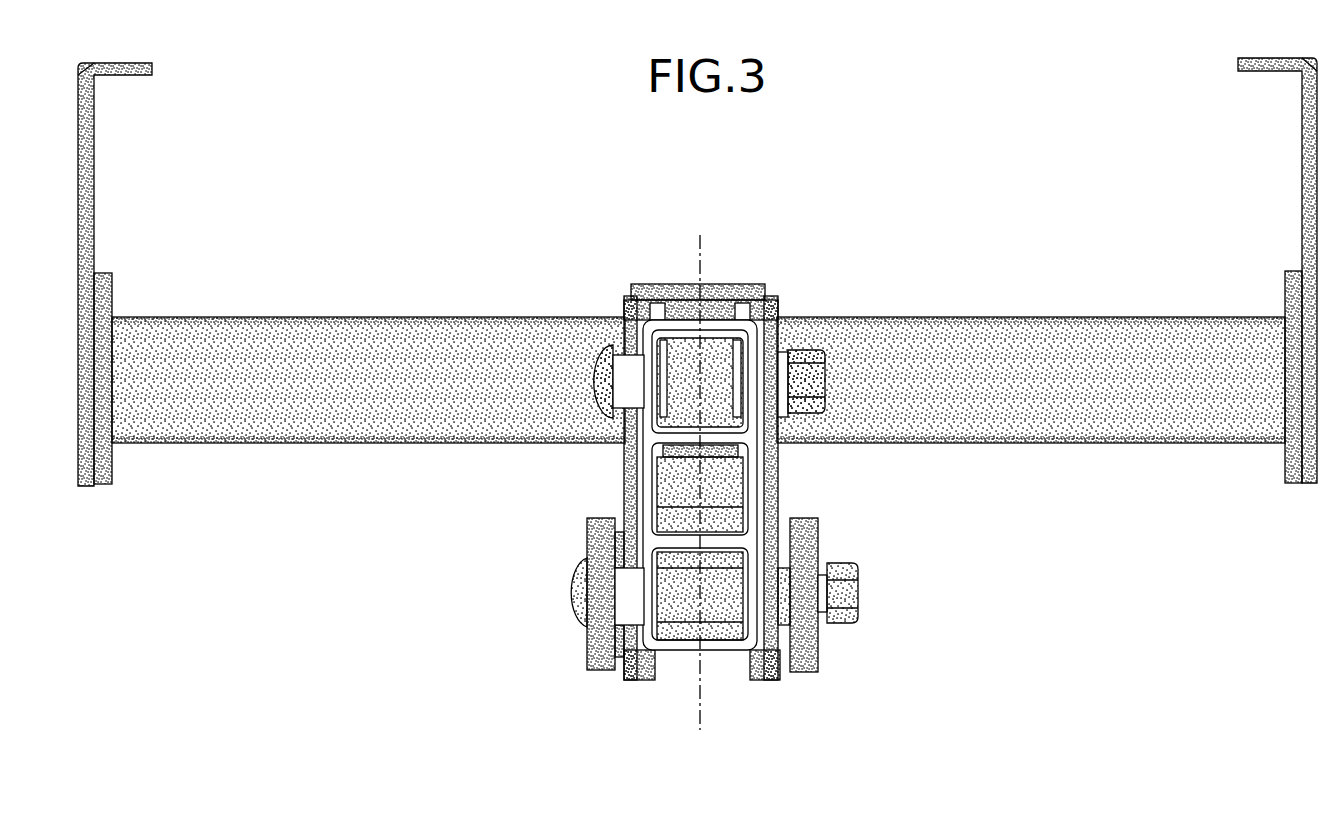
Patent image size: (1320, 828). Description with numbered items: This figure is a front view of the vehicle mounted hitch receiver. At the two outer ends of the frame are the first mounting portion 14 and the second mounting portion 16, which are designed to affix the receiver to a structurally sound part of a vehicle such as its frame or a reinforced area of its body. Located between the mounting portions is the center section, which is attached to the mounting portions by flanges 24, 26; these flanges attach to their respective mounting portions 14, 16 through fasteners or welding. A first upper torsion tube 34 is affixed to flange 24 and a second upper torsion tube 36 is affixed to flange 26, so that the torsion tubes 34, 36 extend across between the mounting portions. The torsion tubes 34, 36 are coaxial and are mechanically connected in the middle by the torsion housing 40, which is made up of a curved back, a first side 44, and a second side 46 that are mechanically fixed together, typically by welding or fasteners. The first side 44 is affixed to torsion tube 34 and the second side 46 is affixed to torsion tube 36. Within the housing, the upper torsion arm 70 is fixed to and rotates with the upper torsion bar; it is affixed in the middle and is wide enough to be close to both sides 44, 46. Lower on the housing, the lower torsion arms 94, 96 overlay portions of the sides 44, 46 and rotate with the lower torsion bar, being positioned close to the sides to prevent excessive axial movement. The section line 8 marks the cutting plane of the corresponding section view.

The section line 8- 8 is at (737, 712).
The first mounting portion 14 is at (94, 196).
The second mounting portion 16 is at (1302, 140).
The flange 24 is at (112, 470).
The flange 26 is at (1285, 470).
The first upper torsion tube 34 is at (362, 316).
The second upper torsion tube 36 is at (970, 317).
The torsion housing 40 is at (697, 440).
The first side 44 is at (625, 478).
The second side 46 is at (779, 478).
The upper torsion arm 70 is at (677, 352).
The lower torsion arm 94 is at (590, 653).
The lower torsion arm 96 is at (810, 660).